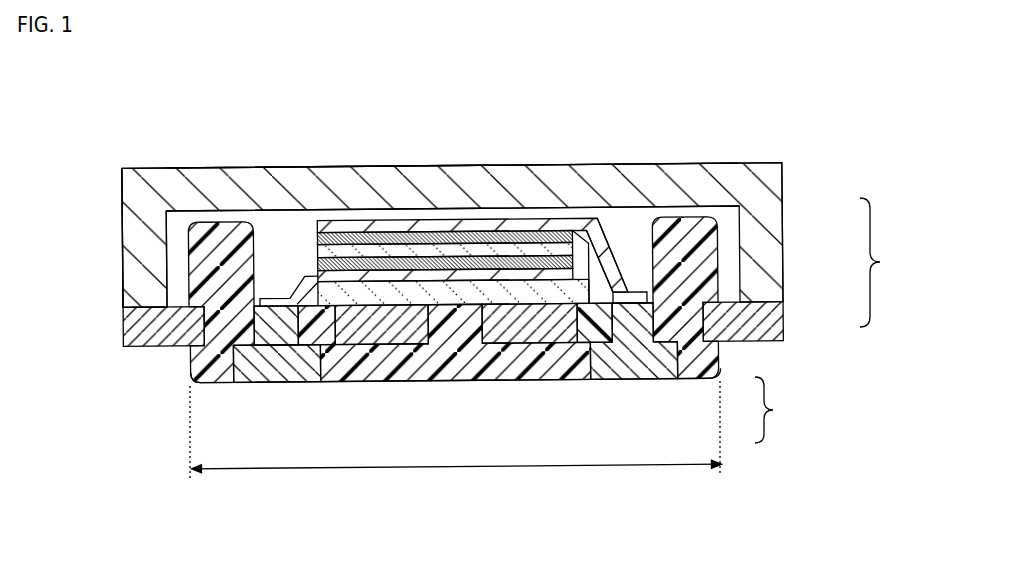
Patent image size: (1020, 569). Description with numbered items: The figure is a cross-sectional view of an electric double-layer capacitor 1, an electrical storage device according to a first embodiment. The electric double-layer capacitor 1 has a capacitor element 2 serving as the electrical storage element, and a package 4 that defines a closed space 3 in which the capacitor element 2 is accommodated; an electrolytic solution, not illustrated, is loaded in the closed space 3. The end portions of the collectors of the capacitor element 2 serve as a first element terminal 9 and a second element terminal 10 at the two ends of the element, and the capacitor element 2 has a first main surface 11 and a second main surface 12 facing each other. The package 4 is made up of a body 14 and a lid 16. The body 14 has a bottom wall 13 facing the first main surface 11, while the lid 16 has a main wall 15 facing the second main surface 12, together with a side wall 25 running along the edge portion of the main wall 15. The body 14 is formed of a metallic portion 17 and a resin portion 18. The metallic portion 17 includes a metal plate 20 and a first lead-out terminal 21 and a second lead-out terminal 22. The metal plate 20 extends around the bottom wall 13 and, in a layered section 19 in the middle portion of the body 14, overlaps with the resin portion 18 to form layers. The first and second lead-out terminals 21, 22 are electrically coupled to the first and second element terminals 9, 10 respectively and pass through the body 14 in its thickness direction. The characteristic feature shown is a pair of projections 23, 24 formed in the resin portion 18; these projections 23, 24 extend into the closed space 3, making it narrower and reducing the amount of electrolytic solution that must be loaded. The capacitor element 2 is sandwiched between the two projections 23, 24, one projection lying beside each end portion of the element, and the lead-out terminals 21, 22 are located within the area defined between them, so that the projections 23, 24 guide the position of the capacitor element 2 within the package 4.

The electric double-layer capacitor 1 is at (338, 83).
The capacitor element 2 is at (458, 204).
The closed space 3 is at (619, 228).
The package 4 is at (879, 262).
The first element terminal 9 is at (276, 299).
The second element terminal 10 is at (640, 297).
The first main surface 11 is at (445, 383).
The second main surface 12 is at (467, 220).
The bottom wall 13 is at (503, 383).
The body 14 is at (783, 322).
The main wall 15 is at (522, 180).
The lid 16 is at (783, 222).
The metallic portion 17 is at (780, 410).
The resin portion 18 is at (352, 384).
The layered section 19 is at (463, 468).
The metal plate 20 is at (737, 343).
The first lead-out terminal 21 is at (280, 383).
The second lead-out terminal 22 is at (633, 373).
The projection 23 is at (202, 226).
The projection 24 is at (693, 222).
The side wall 25 is at (130, 237).